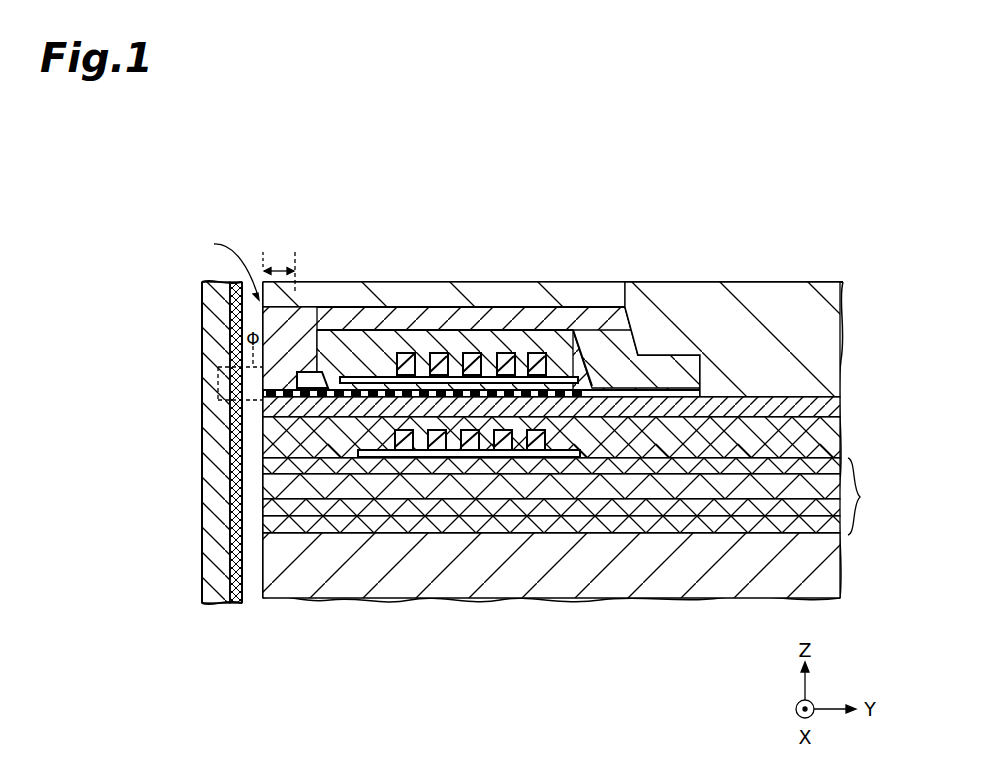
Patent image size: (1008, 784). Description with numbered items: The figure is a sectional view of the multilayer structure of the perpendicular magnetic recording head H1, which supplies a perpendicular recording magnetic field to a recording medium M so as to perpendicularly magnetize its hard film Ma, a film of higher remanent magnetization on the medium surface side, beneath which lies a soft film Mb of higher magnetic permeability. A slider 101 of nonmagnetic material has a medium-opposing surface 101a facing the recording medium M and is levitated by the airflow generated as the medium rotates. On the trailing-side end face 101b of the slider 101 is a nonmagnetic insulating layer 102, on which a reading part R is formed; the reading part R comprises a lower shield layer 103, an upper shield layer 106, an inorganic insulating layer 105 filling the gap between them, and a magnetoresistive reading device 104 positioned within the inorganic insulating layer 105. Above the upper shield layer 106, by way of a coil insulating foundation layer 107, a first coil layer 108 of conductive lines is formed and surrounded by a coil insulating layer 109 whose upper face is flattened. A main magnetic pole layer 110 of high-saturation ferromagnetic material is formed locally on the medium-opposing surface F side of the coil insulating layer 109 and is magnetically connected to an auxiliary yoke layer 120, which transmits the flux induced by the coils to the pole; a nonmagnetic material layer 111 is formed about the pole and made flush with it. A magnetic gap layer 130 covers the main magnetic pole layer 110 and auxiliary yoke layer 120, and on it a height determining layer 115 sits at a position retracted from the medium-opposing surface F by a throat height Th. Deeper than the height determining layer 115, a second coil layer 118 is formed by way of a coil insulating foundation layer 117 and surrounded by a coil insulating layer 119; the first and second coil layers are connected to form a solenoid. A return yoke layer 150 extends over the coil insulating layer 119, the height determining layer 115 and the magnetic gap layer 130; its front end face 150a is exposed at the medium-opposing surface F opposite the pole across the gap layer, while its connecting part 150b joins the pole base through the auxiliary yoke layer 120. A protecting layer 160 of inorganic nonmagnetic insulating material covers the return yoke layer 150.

The perpendicular magnetic recording head H1 is at (163, 180).
The slider 101 is at (542, 597).
The medium-opposing surface 101a is at (262, 568).
The trailing-side end face 101b is at (734, 527).
The nonmagnetic insulating layer 102 is at (263, 524).
The lower shield layer 103 is at (263, 508).
The reading device 104 is at (263, 485).
The inorganic insulating layer 105 is at (370, 493).
The upper shield layer 106 is at (263, 466).
The coil insulating foundation layer 107 is at (420, 458).
The first coil layer 108 is at (475, 455).
The coil insulating layer 109 is at (263, 440).
The main magnetic pole layer 110 is at (263, 407).
The nonmagnetic material layer 111 is at (803, 397).
The height determining layer 115 is at (308, 372).
The coil insulating foundation layer 117 is at (373, 345).
The second coil layer 118 is at (468, 347).
The coil insulating layer 119 is at (558, 335).
The auxiliary yoke layer 120 is at (418, 385).
The magnetic gap layer 130 is at (274, 258).
The return yoke layer 150 is at (515, 300).
The front end face 150a is at (262, 310).
The connecting part 150b is at (662, 367).
The protecting layer 160 is at (743, 318).
The recording medium M is at (203, 608).
The hard film Ma is at (216, 600).
The soft film Mb is at (236, 568).
The reading part R is at (862, 496).
The medium-opposing surface F is at (229, 266).
The throat height Th is at (281, 268).